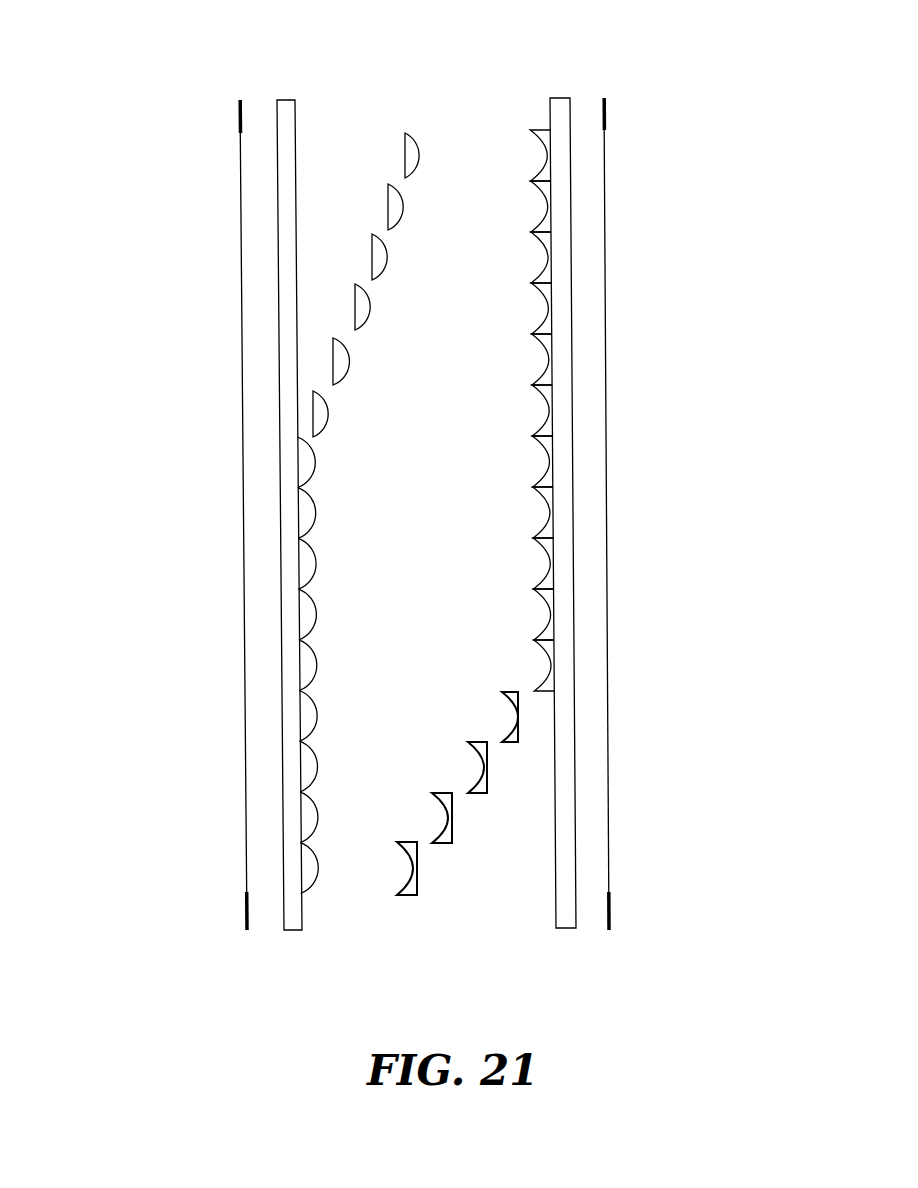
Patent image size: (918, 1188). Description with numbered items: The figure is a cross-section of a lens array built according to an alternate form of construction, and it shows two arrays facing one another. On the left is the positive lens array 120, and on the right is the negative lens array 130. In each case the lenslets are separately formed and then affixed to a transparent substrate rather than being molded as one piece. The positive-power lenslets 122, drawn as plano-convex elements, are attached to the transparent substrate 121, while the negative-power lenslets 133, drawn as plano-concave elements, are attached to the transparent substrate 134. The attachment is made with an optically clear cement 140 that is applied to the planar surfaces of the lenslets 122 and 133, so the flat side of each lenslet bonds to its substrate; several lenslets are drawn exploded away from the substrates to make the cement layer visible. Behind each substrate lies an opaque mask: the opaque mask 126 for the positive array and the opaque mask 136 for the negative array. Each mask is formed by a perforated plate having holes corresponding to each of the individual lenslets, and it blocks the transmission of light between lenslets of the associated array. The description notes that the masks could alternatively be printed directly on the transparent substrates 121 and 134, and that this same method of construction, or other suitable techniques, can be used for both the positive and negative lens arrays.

The positive lens array 120 is at (196, 117).
The transparent substrate 121 is at (277, 100).
The positive-power lenslets 122 is at (405, 132).
The opaque mask 126 is at (245, 920).
The negative lens array 130 is at (668, 112).
The negative-power lenslets 133 is at (418, 893).
The transparent substrate 134 is at (570, 98).
The opaque mask 136 is at (610, 920).
The optically clear cement 140 is at (355, 330).